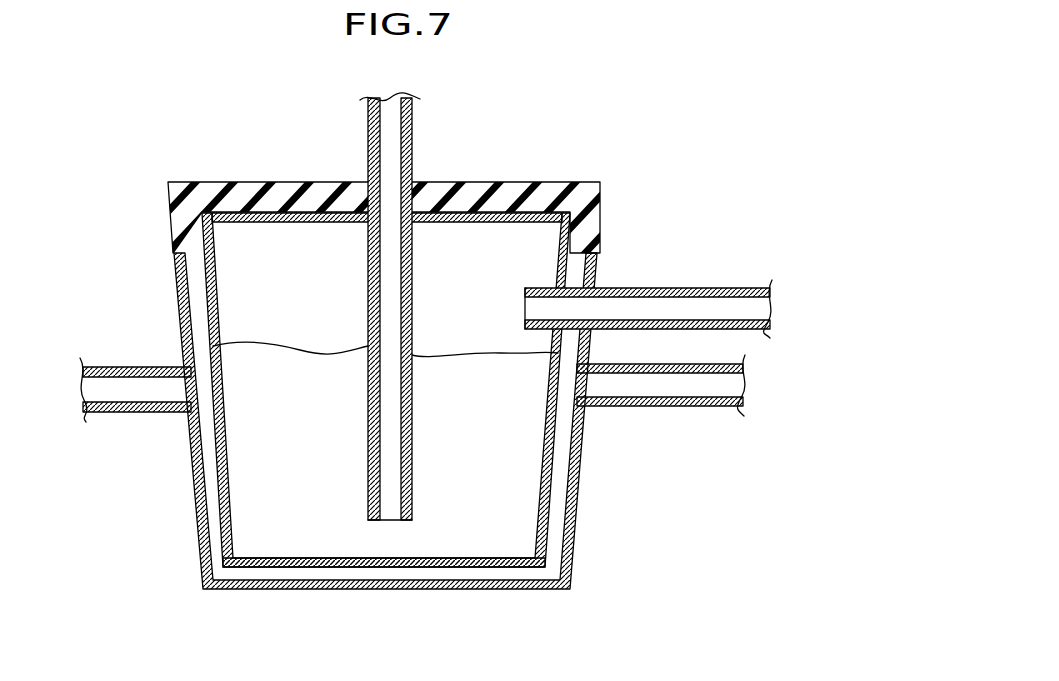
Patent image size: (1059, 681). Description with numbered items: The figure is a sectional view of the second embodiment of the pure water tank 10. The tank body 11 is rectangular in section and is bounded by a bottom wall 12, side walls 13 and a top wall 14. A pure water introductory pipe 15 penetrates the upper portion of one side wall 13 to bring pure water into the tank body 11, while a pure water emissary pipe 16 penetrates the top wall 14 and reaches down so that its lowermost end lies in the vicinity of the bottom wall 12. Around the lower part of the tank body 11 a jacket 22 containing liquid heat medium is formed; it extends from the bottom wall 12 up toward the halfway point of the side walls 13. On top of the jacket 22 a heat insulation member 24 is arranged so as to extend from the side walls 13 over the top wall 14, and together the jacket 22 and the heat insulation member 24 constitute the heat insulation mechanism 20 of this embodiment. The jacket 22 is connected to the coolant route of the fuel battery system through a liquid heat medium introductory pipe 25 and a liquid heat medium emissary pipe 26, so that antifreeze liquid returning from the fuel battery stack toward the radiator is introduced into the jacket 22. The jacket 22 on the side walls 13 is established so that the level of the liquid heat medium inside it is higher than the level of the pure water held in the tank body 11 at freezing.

The pure water tank 10 is at (591, 146).
The tank body 11 is at (238, 438).
The bottom wall 12 is at (326, 556).
The side walls 13 is at (234, 511).
The top wall 14 is at (303, 226).
The pure water introductory pipe 15 is at (709, 288).
The pure water emissary pipe 16 is at (413, 118).
The heat insulation mechanism 20 is at (166, 231).
The jacket 22 is at (558, 528).
The heat insulation member 24 is at (208, 181).
The liquid heat medium introductory pipe 25 is at (114, 412).
The liquid heat medium emissary pipe 26 is at (696, 407).